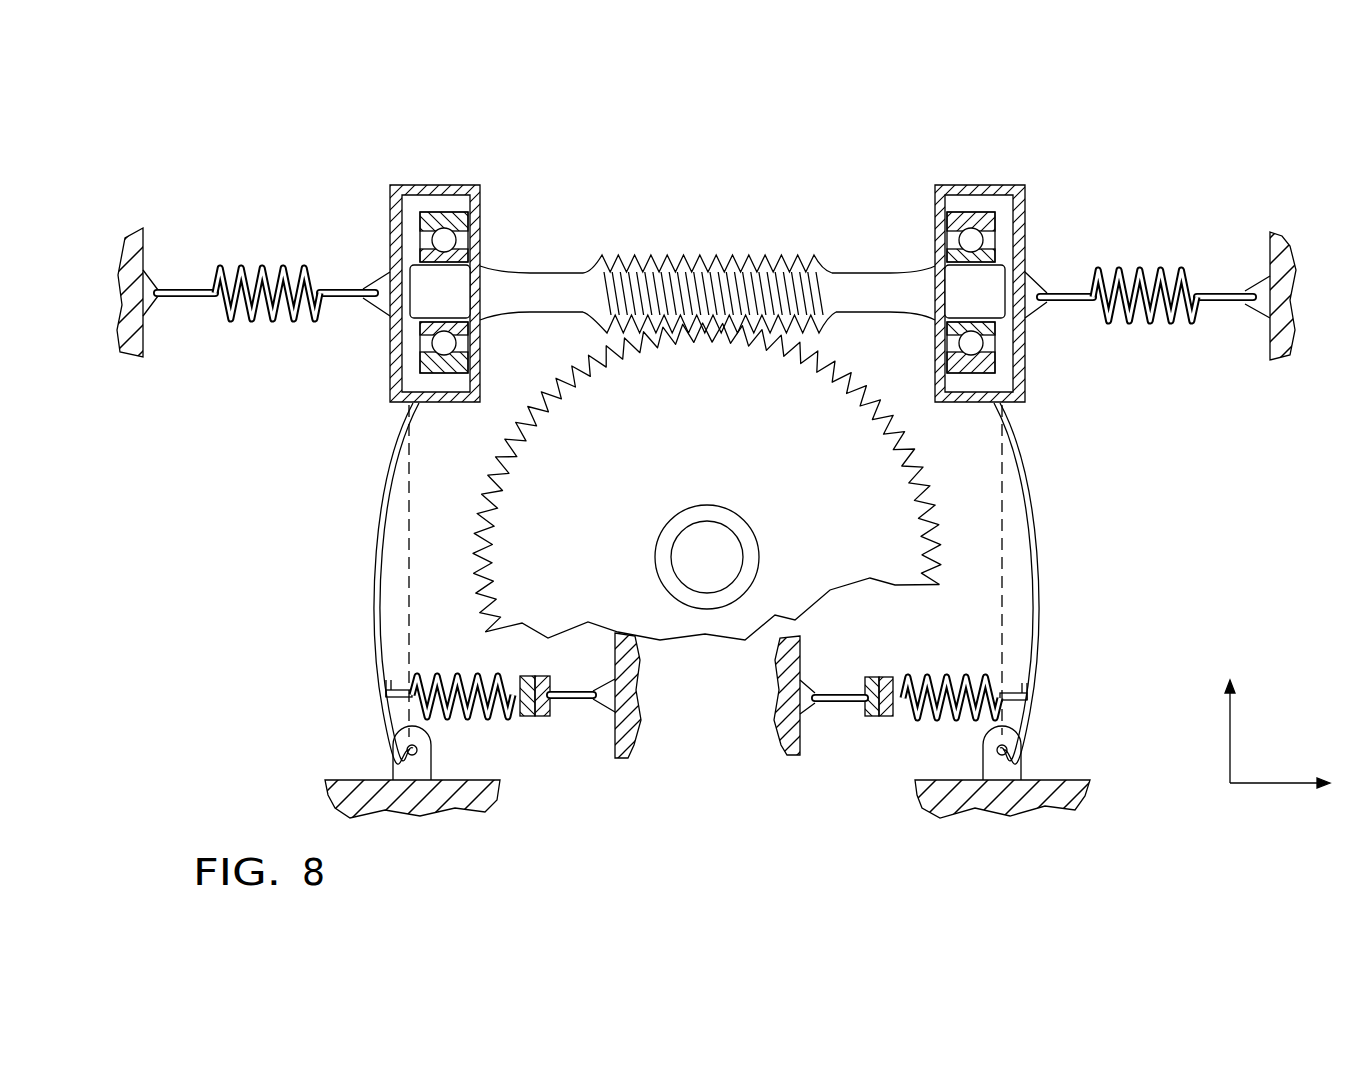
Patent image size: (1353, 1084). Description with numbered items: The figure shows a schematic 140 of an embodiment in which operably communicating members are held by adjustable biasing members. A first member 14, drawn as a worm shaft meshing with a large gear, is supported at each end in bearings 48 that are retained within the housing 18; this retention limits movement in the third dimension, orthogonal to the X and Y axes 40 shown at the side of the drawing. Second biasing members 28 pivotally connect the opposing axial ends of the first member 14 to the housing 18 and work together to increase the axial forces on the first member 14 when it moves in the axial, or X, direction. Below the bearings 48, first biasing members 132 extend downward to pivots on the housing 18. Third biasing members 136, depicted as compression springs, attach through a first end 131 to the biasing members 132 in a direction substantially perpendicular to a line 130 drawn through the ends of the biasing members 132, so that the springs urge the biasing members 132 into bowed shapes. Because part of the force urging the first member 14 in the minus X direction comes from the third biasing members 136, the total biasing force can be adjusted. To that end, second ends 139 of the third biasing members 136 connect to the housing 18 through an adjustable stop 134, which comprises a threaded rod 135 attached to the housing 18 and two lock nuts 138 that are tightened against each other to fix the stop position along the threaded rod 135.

The first member 14 is at (790, 266).
The housing 18 is at (143, 252).
The second biasing members 28 is at (275, 270).
The X and Y axes 40 is at (1265, 786).
The bearings 48 is at (488, 212).
The line 130 is at (409, 520).
The first end 131 is at (397, 690).
The first biasing members 132 is at (373, 620).
The adjustable stop 134 is at (758, 836).
The threaded rod 135 is at (827, 703).
The third biasing members 136 is at (488, 720).
The lock nuts 138 is at (884, 720).
The second ends 139 is at (903, 678).
The schematic 140 is at (952, 125).